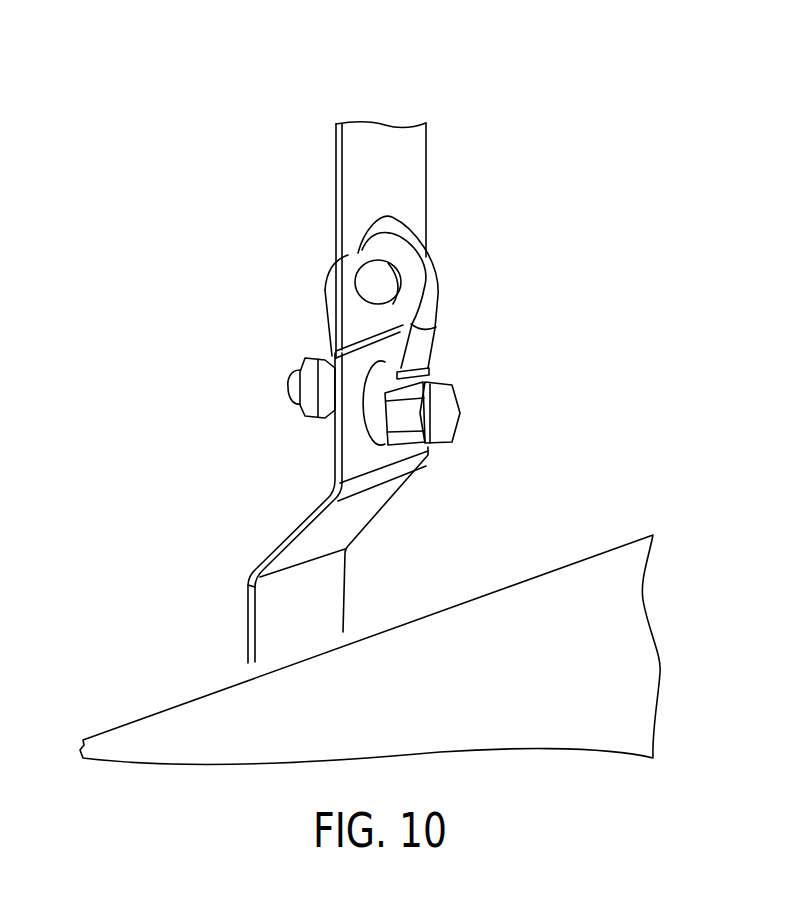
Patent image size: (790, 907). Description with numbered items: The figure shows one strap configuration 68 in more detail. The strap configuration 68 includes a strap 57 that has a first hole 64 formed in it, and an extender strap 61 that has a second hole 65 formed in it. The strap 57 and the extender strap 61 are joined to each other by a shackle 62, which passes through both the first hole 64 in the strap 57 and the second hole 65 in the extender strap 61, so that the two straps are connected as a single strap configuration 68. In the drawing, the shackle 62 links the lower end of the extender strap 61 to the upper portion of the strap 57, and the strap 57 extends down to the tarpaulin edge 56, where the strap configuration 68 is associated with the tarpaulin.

The strap configuration 68 is at (422, 105).
The extender strap 61 is at (426, 192).
The shackle 62 is at (424, 299).
The second hole 65 is at (373, 282).
The first hole 64 is at (375, 430).
The strap 57 is at (327, 595).
The tarpaulin edge 56 is at (573, 560).